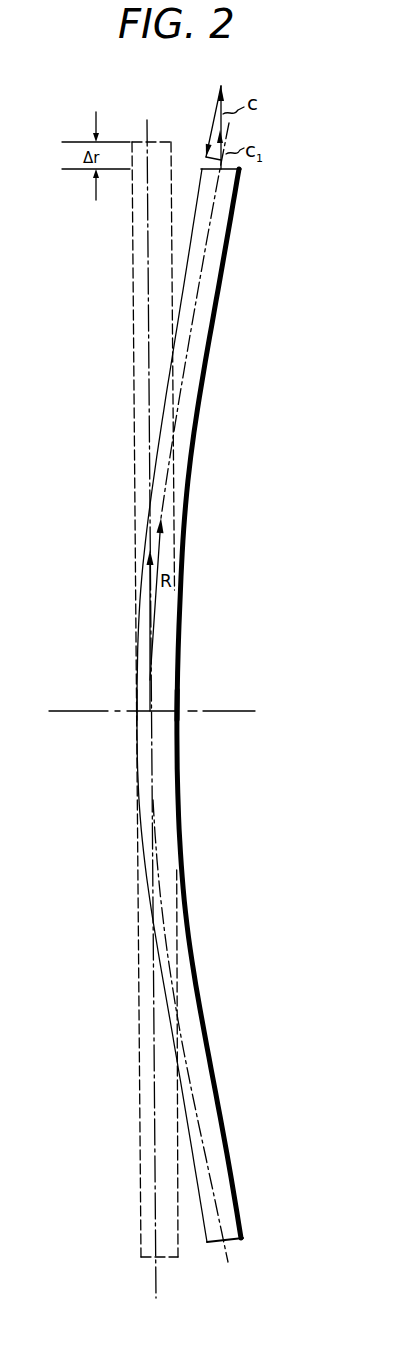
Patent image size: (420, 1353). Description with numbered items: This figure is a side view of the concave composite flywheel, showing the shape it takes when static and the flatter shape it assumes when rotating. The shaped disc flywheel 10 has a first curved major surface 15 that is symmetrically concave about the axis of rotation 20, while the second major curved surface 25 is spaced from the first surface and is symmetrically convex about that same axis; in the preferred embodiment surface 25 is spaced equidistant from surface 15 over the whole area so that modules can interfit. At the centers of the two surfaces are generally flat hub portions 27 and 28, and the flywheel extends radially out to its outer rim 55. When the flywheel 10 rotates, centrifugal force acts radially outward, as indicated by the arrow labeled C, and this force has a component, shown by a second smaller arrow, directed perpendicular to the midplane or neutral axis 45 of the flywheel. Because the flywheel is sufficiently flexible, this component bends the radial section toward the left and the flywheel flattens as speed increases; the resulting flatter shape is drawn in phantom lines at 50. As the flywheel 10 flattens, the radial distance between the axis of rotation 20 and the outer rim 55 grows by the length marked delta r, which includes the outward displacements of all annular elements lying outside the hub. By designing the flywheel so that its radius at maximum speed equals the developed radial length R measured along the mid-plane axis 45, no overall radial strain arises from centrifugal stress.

The shaped disc flywheel 10 is at (183, 701).
The first curved major surface 15 is at (214, 327).
The axis of rotation 20 is at (228, 711).
The second major curved surface 25 is at (190, 242).
The flat hub portion 27 is at (178, 692).
The flat hub portion 28 is at (137, 700).
The midplane or neutral axis 45 is at (180, 403).
The flattened shape in phantom lines 50 is at (132, 343).
The outer rim 55 is at (239, 170).